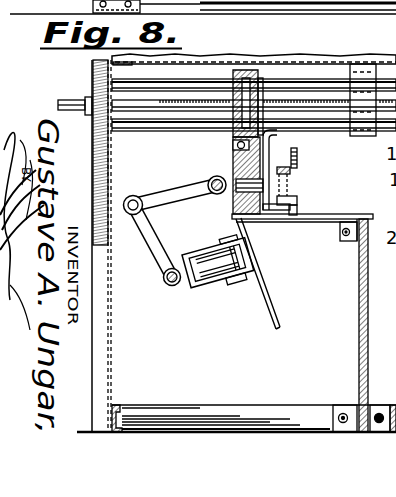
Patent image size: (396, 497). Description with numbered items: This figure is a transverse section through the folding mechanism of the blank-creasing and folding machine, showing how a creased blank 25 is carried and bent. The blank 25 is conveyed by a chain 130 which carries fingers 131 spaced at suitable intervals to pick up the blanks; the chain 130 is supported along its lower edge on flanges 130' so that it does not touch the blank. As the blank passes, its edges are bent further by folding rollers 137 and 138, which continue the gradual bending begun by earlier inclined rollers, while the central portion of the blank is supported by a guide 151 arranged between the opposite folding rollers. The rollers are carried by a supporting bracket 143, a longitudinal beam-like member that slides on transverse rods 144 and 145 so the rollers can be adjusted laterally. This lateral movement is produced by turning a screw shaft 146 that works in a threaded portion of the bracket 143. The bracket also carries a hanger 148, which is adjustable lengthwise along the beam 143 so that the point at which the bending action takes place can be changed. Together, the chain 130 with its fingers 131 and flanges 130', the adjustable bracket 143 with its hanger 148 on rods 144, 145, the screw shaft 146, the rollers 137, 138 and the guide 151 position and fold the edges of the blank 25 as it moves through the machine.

The blank 25 is at (281, 316).
The chain 130 is at (304, 172).
The flanges 130' is at (293, 242).
The fingers 131 is at (298, 157).
The roller 137 is at (243, 270).
The roller 138 is at (234, 172).
The bracket 143 is at (247, 100).
The transverse rod 144 is at (133, 89).
The transverse rod 145 is at (137, 126).
The screw shaft 146 is at (60, 103).
The hanger 148 is at (239, 145).
The guide 151 is at (361, 352).